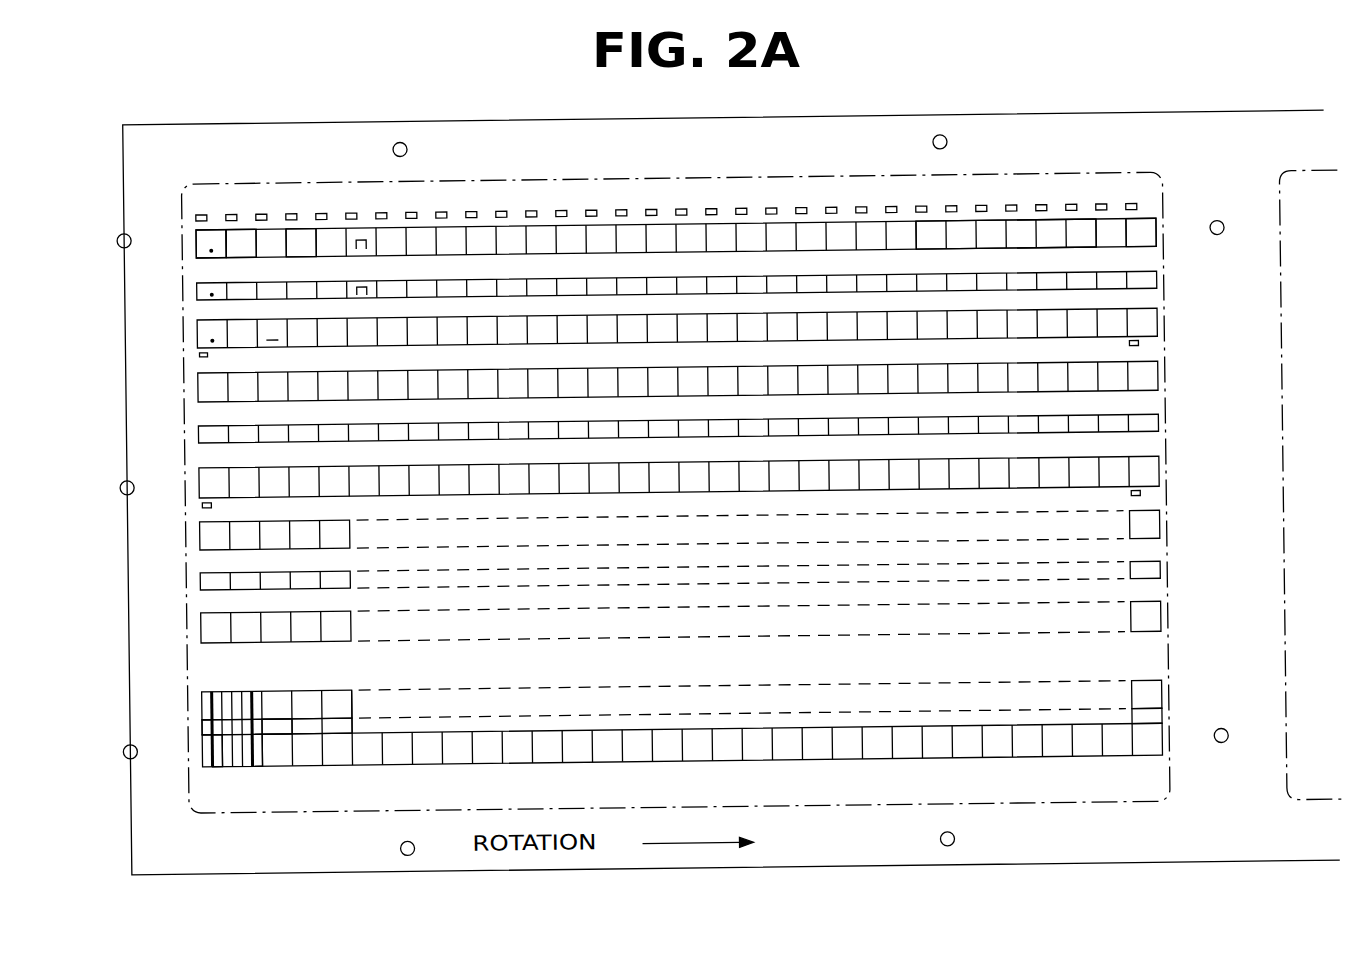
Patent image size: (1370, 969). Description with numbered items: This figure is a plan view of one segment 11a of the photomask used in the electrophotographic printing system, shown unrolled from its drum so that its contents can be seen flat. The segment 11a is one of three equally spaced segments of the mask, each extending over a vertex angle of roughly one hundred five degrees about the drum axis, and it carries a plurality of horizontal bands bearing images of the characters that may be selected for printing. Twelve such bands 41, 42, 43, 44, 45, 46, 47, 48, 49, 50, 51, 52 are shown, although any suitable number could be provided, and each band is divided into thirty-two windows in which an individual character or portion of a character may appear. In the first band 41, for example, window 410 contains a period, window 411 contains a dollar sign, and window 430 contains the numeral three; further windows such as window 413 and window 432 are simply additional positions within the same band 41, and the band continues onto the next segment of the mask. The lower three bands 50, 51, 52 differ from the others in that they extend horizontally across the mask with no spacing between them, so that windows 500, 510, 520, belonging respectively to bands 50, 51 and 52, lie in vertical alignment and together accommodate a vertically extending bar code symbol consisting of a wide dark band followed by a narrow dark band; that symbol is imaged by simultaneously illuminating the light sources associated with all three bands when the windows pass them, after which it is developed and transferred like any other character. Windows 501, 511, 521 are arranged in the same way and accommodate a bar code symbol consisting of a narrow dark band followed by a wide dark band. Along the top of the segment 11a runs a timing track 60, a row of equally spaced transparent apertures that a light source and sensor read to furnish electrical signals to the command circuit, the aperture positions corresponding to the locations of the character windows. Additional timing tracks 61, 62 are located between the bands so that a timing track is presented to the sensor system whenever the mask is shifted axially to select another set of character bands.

The segment 11a is at (424, 874).
The band 41 is at (687, 192).
The band 42 is at (196, 290).
The band 43 is at (196, 333).
The band 44 is at (196, 388).
The band 45 is at (196, 434).
The band 46 is at (196, 480).
The band 47 is at (196, 535).
The band 48 is at (196, 582).
The band 49 is at (196, 627).
The band 50 is at (196, 705).
The band 51 is at (652, 755).
The band 52 is at (652, 746).
The timing track 60 is at (198, 214).
The timing track 61 is at (206, 356).
The timing track 62 is at (208, 506).
The window 410 is at (212, 230).
The window 411 is at (242, 230).
The fourth character cell 413 is at (302, 230).
The window 430 is at (1080, 230).
The end character cell 432 is at (1145, 230).
The window 500 is at (232, 670).
The window 501 is at (244, 692).
The window 510 is at (198, 734).
The window 511 is at (256, 729).
The window 520 is at (213, 761).
The window 521 is at (251, 758).